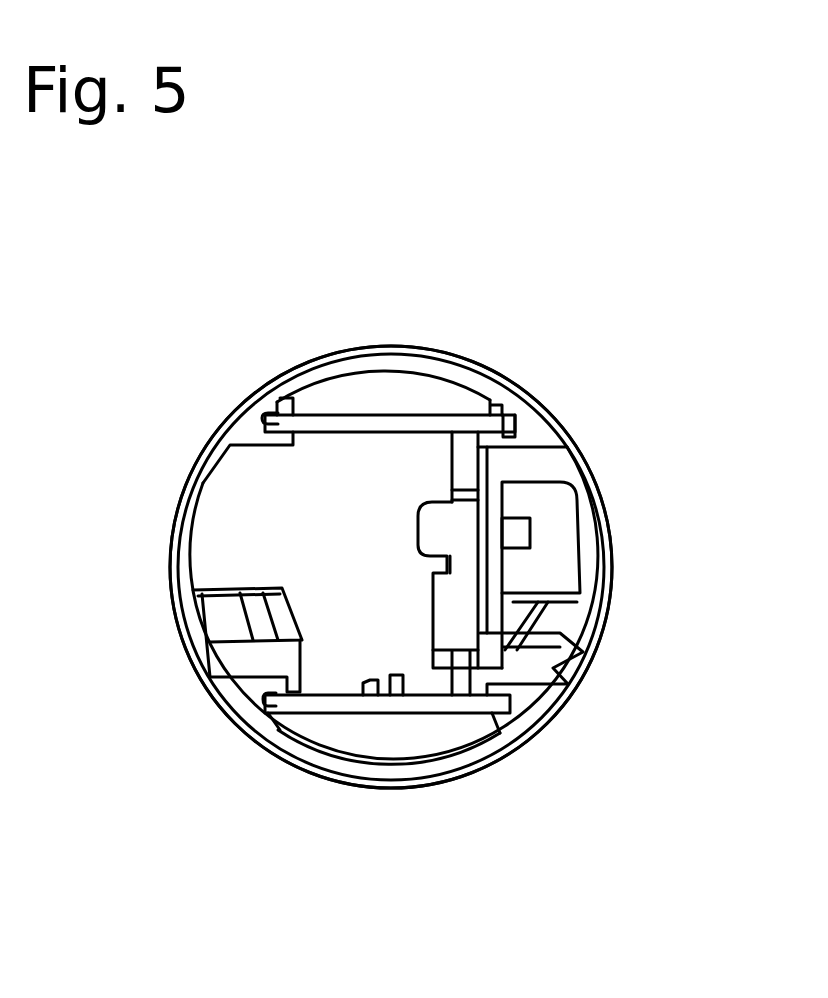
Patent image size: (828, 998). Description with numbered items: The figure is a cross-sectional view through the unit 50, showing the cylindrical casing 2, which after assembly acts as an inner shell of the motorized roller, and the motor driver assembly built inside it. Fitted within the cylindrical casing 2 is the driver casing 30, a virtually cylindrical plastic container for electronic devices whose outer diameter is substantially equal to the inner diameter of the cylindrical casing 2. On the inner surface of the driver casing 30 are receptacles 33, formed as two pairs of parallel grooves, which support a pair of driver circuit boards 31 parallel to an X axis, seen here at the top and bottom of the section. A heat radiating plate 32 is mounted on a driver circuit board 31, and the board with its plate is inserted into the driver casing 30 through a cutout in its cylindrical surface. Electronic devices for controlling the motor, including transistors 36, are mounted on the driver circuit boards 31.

The cylindrical casing 2 is at (556, 434).
The driver casing 30 is at (431, 353).
The driver circuit board 31 is at (353, 415).
The heat radiating plate 32 is at (590, 546).
The receptacles 33 is at (278, 410).
The transistors 36 is at (458, 612).
The unit 50 is at (592, 340).